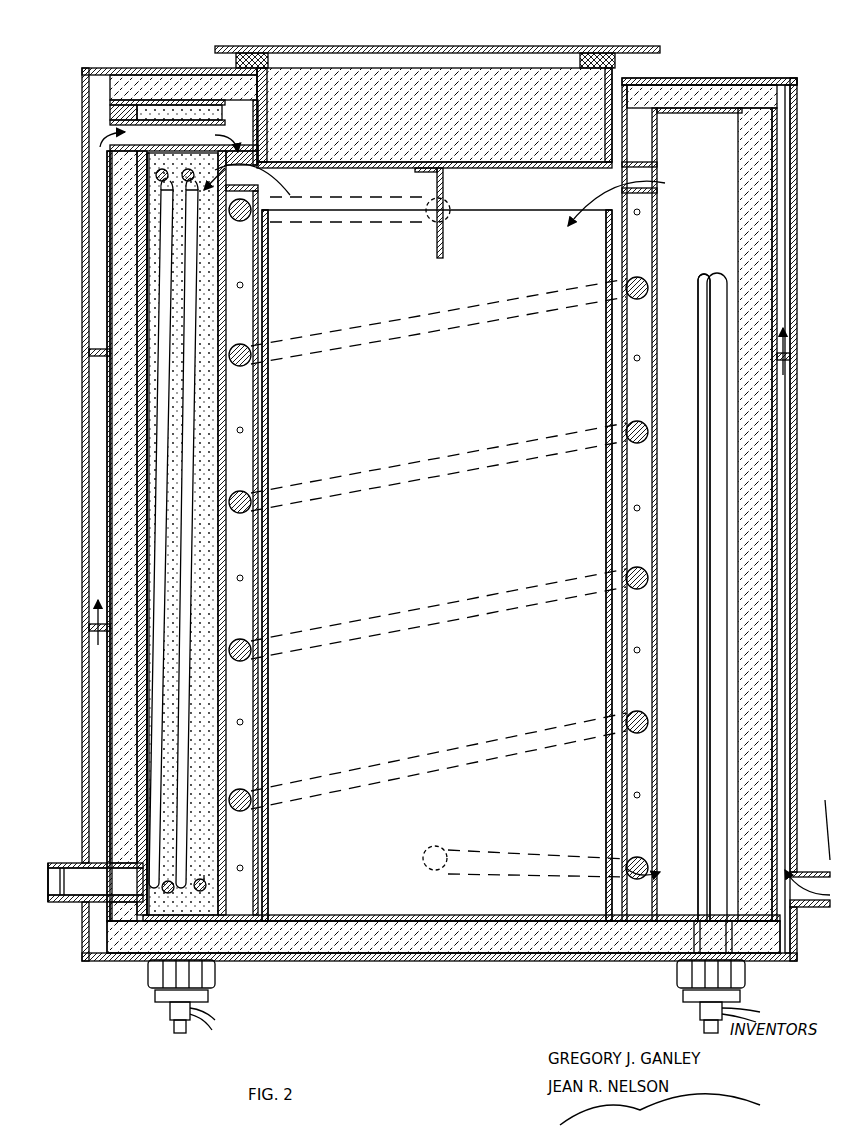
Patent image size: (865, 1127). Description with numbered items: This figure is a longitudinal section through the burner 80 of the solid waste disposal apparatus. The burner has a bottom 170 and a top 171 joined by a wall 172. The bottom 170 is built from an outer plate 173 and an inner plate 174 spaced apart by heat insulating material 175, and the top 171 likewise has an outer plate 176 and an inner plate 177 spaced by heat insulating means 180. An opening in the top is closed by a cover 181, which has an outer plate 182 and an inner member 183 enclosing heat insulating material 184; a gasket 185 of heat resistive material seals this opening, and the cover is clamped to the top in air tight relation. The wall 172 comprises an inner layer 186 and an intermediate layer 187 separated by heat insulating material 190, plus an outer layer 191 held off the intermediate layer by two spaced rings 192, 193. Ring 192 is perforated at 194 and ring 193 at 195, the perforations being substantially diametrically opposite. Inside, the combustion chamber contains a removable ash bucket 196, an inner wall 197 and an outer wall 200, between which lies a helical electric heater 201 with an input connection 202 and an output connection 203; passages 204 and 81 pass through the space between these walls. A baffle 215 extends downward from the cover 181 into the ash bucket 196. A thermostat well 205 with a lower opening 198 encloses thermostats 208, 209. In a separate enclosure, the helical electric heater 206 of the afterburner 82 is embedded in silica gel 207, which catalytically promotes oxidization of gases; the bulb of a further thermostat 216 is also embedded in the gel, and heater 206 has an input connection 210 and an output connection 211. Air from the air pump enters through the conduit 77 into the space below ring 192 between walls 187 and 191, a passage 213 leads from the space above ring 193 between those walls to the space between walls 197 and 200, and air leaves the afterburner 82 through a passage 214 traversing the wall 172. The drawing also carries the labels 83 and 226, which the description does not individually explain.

The conduit 77 is at (814, 830).
The burner 80 is at (450, 403).
The passage 81 is at (218, 534).
The afterburner 82 is at (165, 488).
The drain outlet 83 is at (62, 863).
The bottom 170 is at (248, 955).
The top 171 is at (153, 65).
The wall 172 is at (75, 278).
The outer plate 173 is at (439, 976).
The inner plate 174 is at (420, 930).
The heat insulating material 175 is at (198, 947).
The outer plate 176 is at (730, 78).
The inner plate 177 is at (715, 113).
The heat insulating means 180 is at (720, 104).
The cover 181 is at (495, 42).
The outer plate 182 is at (560, 53).
The inner member 183 is at (524, 168).
The heat insulating material 184 is at (434, 115).
The gasket 185 is at (615, 62).
The inner layer 186 is at (740, 190).
The intermediate layer 187 is at (118, 300).
The heat insulating material 190 is at (441, 514).
The outer layer 191 is at (785, 418).
The ring 192 is at (92, 630).
The ring 193 is at (92, 352).
The perforation 194 is at (95, 616).
The perforation 195 is at (790, 346).
The removable ash bucket 196 is at (358, 916).
The inner wall 197 is at (265, 432).
The lower opening 198 is at (653, 893).
The outer wall 200 is at (258, 250).
The helical electric heater 201 is at (439, 538).
The input connection 202 is at (448, 220).
The output connection 203 is at (435, 872).
The passage 204 is at (650, 180).
The thermostat well 205 is at (722, 218).
The helical electric heater 206 is at (150, 243).
The silica gel 207 is at (213, 910).
The thermostat 208 is at (707, 660).
The thermostat 209 is at (704, 590).
The input connection 210 is at (162, 896).
The output connection 211 is at (202, 866).
The passage 213 is at (166, 113).
The passage 214 is at (95, 882).
The baffle 215 is at (443, 176).
The thermostat 216 is at (148, 974).
The pipe end 226 is at (48, 882).